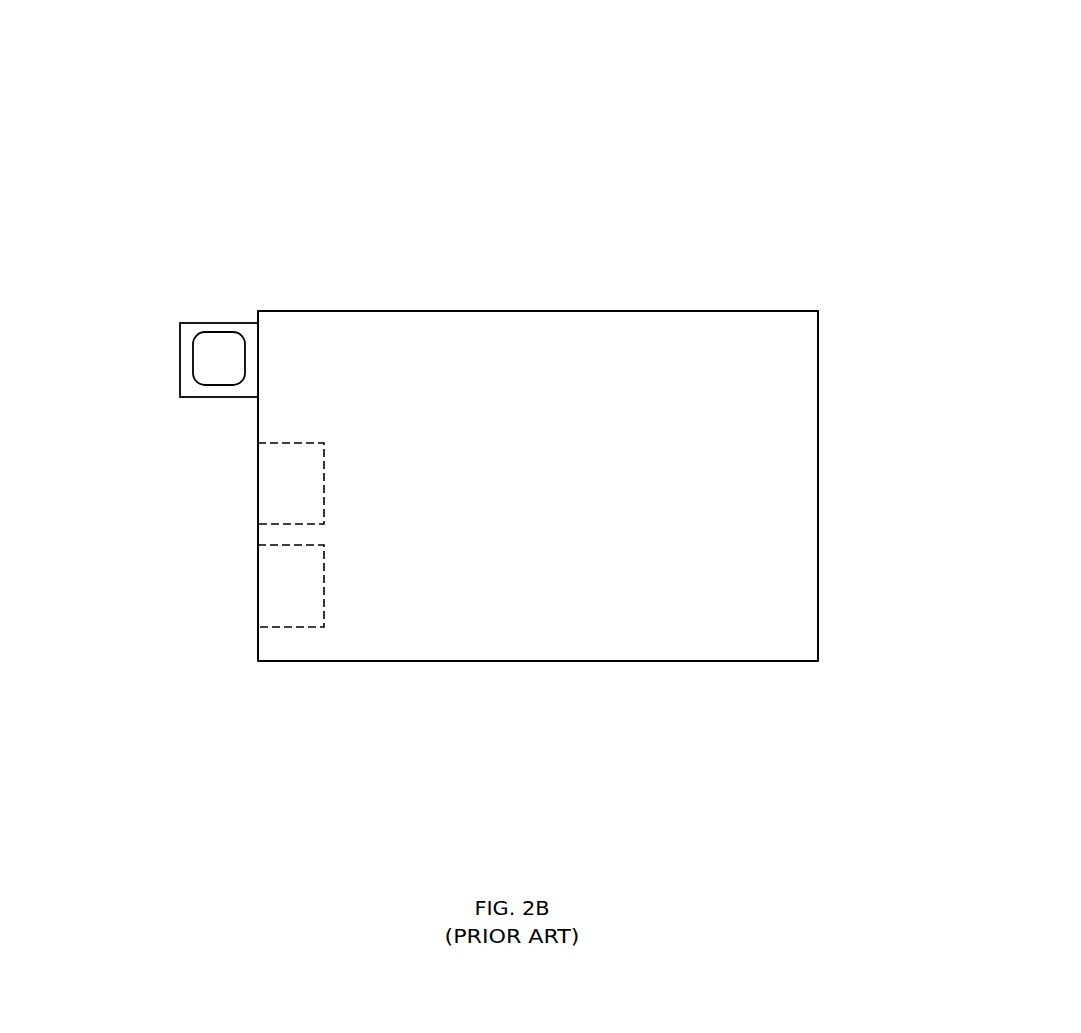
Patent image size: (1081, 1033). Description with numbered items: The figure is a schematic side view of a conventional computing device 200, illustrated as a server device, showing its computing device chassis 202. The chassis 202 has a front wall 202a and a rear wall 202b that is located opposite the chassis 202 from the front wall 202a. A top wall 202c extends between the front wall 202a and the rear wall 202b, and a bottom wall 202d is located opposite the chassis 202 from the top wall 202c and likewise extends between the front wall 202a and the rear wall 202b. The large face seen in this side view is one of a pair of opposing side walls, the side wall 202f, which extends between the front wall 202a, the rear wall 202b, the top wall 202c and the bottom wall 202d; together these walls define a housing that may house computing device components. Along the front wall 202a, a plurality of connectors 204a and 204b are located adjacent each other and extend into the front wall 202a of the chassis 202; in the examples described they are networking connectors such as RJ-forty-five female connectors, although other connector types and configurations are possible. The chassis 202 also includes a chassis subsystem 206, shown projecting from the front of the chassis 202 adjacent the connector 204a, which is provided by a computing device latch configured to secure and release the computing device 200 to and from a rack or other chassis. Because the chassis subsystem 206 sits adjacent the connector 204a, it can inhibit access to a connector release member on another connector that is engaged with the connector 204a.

The conventional computing device 200 is at (962, 102).
The computing device chassis 202 is at (818, 311).
The front wall 202a is at (258, 640).
The rear wall 202b is at (818, 486).
The top wall 202c is at (539, 311).
The bottom wall 202d is at (540, 662).
The side wall 202f is at (551, 498).
The connector 204a is at (324, 483).
The connector 204b is at (324, 585).
The chassis subsystem 206 is at (180, 360).